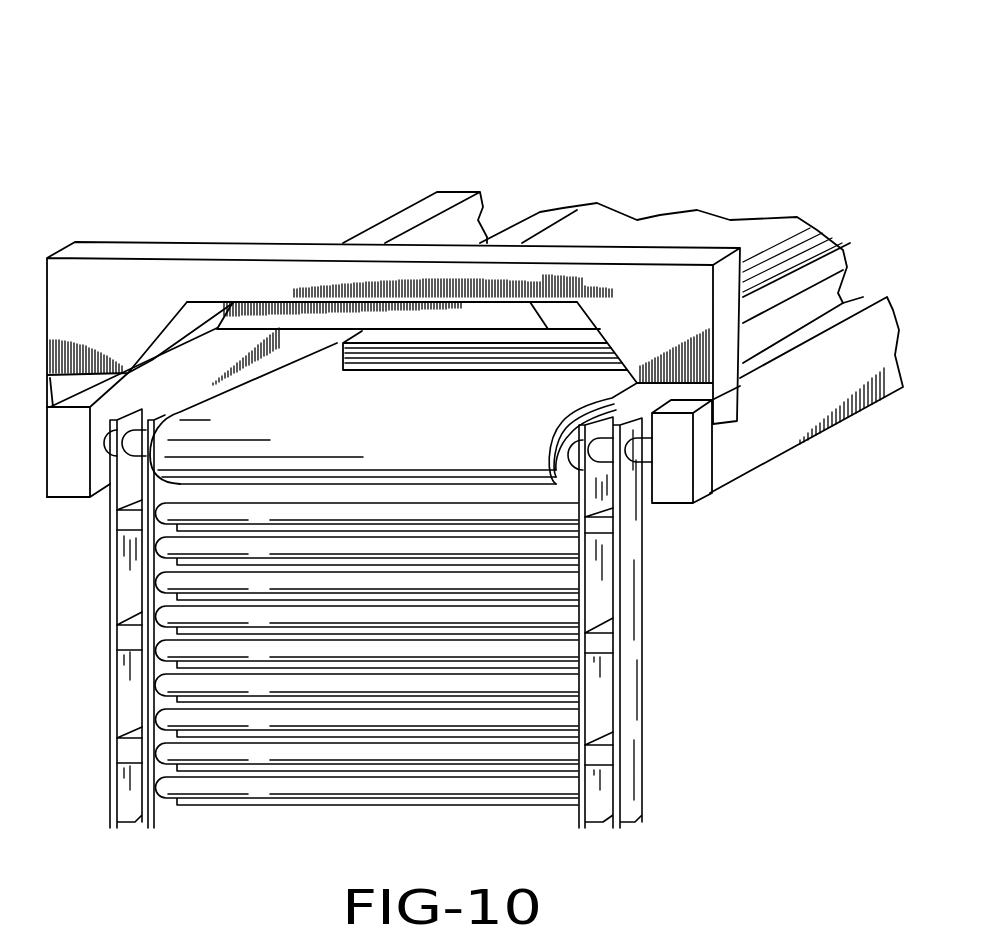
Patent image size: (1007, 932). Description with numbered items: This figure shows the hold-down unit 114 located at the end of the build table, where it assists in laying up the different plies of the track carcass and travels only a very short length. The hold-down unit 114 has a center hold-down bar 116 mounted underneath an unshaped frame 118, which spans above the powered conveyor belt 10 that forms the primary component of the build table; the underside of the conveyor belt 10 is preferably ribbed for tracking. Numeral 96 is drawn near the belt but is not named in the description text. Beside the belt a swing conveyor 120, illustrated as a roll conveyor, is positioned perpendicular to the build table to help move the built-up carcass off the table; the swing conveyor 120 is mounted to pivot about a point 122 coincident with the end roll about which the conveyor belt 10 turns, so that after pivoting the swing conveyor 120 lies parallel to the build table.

The hold-down unit 114 is at (612, 128).
The unshaped frame 118 is at (117, 253).
The center hold-down bar 116 is at (478, 317).
The sheet tray 96 is at (340, 357).
The conveyor belt 10 is at (360, 406).
The swing conveyor 120 is at (553, 653).
The pivot point 122 is at (127, 447).